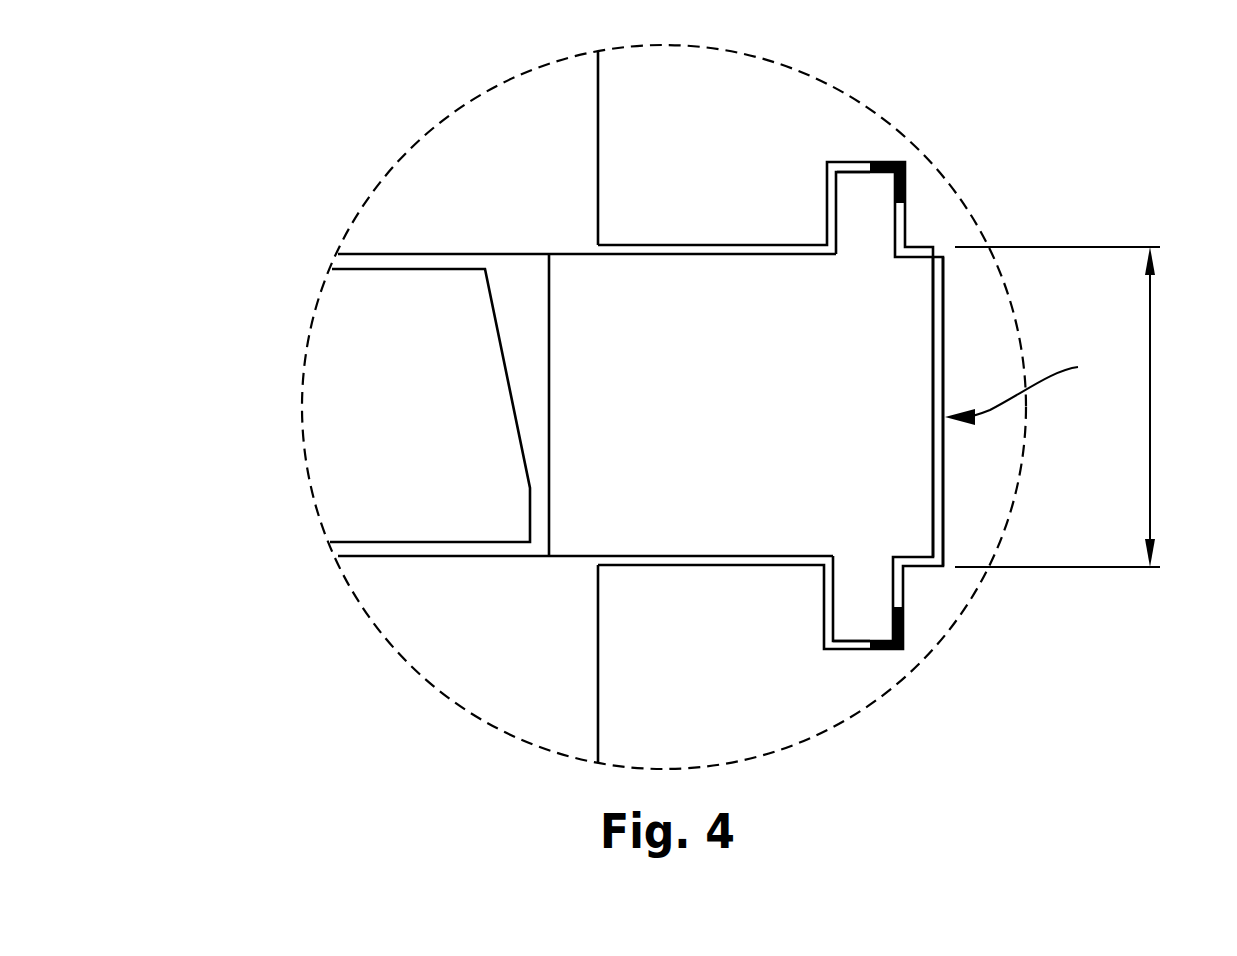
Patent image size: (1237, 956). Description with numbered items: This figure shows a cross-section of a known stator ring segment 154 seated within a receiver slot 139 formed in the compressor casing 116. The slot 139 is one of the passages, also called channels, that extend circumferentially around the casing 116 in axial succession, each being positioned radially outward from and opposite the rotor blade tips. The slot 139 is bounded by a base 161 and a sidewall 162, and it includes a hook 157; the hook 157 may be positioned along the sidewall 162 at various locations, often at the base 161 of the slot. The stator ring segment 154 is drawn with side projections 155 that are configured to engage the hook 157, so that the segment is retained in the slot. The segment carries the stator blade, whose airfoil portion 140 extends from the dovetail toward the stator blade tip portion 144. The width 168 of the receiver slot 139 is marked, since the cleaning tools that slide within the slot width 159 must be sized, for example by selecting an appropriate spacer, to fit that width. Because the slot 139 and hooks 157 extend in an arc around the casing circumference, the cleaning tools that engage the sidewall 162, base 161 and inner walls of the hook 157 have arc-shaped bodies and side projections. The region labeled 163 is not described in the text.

The casing 116 is at (730, 720).
The receiver slot 139 is at (1036, 392).
The airfoil portion 140 is at (482, 556).
The stator blade tip portion 144 is at (342, 319).
The stator ring segment 154 is at (614, 308).
The side projections 155 is at (868, 180).
The hook 157 is at (845, 170).
The receiver slot 159 is at (905, 187).
The base 161 is at (945, 363).
The sidewall 162 is at (667, 255).
The lower wall section 163 is at (933, 478).
The width 168 is at (1153, 323).